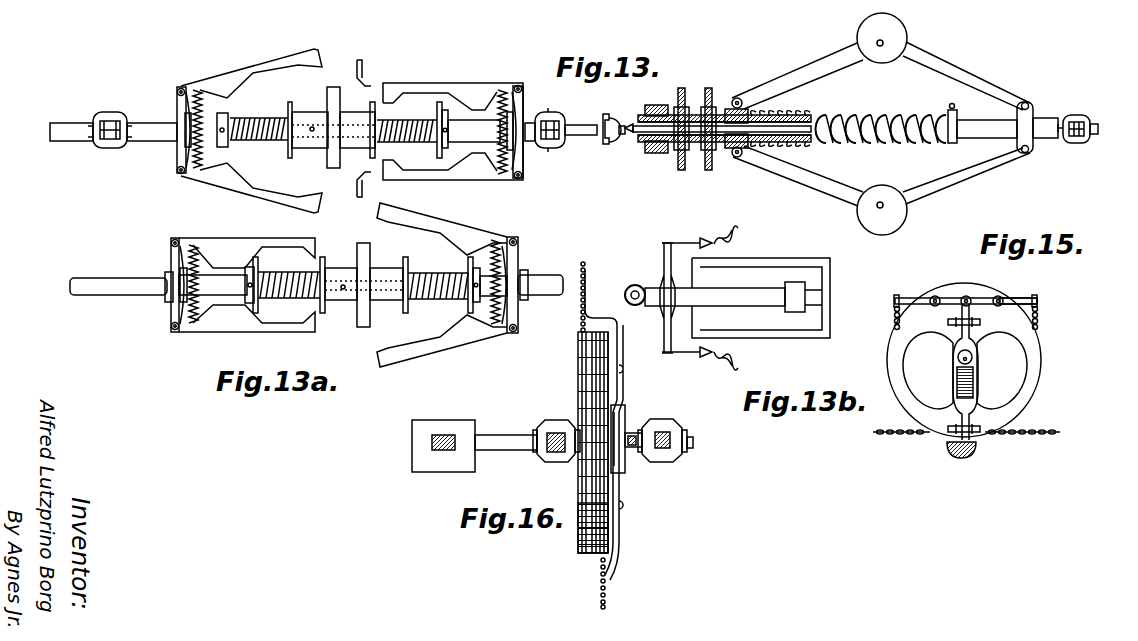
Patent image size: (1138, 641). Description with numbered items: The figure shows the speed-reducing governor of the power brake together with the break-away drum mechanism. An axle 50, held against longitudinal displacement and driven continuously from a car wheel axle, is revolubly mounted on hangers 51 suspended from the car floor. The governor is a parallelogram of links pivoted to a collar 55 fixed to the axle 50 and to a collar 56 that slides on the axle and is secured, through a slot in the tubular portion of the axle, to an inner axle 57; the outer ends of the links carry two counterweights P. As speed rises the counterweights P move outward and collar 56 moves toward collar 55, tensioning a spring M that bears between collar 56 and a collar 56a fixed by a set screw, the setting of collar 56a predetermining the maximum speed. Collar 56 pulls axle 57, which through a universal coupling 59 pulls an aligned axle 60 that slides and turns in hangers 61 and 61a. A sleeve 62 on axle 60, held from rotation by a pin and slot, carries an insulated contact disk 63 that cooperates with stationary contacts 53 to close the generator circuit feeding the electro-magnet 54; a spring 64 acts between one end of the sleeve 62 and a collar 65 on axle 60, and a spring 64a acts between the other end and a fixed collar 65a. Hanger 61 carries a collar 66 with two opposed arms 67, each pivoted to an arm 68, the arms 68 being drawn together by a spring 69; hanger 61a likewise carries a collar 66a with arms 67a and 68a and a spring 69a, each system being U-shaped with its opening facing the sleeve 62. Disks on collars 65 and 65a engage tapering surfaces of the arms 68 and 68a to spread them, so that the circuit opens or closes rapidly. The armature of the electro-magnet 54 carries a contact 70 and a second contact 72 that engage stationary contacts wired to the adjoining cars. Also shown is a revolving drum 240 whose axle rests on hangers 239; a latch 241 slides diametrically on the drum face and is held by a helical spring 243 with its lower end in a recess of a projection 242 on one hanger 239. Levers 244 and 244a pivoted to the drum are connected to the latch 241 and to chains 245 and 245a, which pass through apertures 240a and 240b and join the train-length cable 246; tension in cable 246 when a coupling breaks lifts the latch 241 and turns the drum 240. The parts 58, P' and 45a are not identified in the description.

In FIG. 13, the axle 50 is at (640, 120).
In FIG. 13, the hangers 51 is at (655, 108).
In FIG. 13, the stationary contacts 53 is at (363, 126).
In FIG. 13B, the electro-magnet 54 is at (773, 260).
In FIG. 13, the collar 55 is at (1032, 117).
In FIG. 13, the sliding collar 56 is at (733, 97).
In FIG. 13, the collar 56a is at (957, 113).
In FIG. 13, the axle 57 is at (628, 133).
In FIG. 13, the lower pivot block 58 is at (732, 149).
In FIG. 13, the universal coupling 59 is at (603, 122).
In FIG. 13, the axle 60 is at (69, 126).
In FIG. 13A, the axle 60 is at (540, 285).
In FIG. 13, the hanger 61 is at (551, 126).
In FIG. 13, the hanger 61a is at (102, 120).
In FIG. 13, the sleeve 62 is at (307, 148).
In FIG. 13A, the sleeve 62 is at (345, 296).
In FIG. 13, the insulated contact disk 63 is at (327, 98).
In FIG. 13A, the insulated contact disk 63 is at (357, 245).
In FIG. 13, the spring 64 is at (410, 125).
In FIG. 13A, the spring 64 is at (439, 286).
In FIG. 13, the spring 64a is at (243, 118).
In FIG. 13A, the spring 64a is at (282, 267).
In FIG. 13, the collar 65 is at (446, 144).
In FIG. 13A, the collar 65 is at (476, 285).
In FIG. 13A, the fixed collar 65a is at (250, 272).
In FIG. 13, the collar 66 is at (517, 117).
In FIG. 13A, the collar 66 is at (519, 308).
In FIG. 13, the collar 66a is at (177, 112).
In FIG. 13, the arms 67 is at (522, 164).
In FIG. 13A, the arms 67 is at (518, 258).
In FIG. 13, the arms 67a is at (180, 164).
In FIG. 13A, the arms 67a is at (175, 313).
In FIG. 13, the arms 68 is at (455, 84).
In FIG. 13A, the arms 68 is at (463, 230).
In FIG. 13, the arms 68a is at (262, 68).
In FIG. 13A, the arms 68a is at (233, 245).
In FIG. 13, the spring 69 is at (503, 113).
In FIG. 13A, the spring 69 is at (497, 262).
In FIG. 13, the spring 69a is at (195, 150).
In FIG. 13A, the spring 69a is at (189, 262).
In FIG. 13B, the contact 70 is at (705, 358).
In FIG. 13B, the second contact 72 is at (710, 241).
In FIG. 13, the counterweight P is at (882, 124).
In FIG. 13, the spring M is at (867, 145).
In FIG. 16, the motor block P' is at (443, 429).
In FIG. 16, the chain 45a is at (581, 318).
In FIG. 16, the hangers 239 is at (543, 452).
In FIG. 15, the revolving drum 240 is at (1030, 382).
In FIG. 16, the revolving drum 240 is at (590, 398).
In FIG. 16, the aperture 240a is at (600, 488).
In FIG. 16, the aperture 240b is at (592, 489).
In FIG. 15, the latch 241 is at (959, 327).
In FIG. 15, the projection 242 is at (962, 458).
In FIG. 15, the helical spring 243 is at (971, 379).
In FIG. 15, the lever 244 is at (903, 298).
In FIG. 16, the lever 244 is at (614, 520).
In FIG. 15, the lever 244a is at (1007, 298).
In FIG. 16, the lever 244a is at (614, 410).
In FIG. 15, the chain or steel cable 245 is at (894, 313).
In FIG. 16, the chain or steel cable 245 is at (601, 578).
In FIG. 15, the chain or cable 245a is at (1054, 315).
In FIG. 15, the chain or steel cable 246 is at (1032, 425).